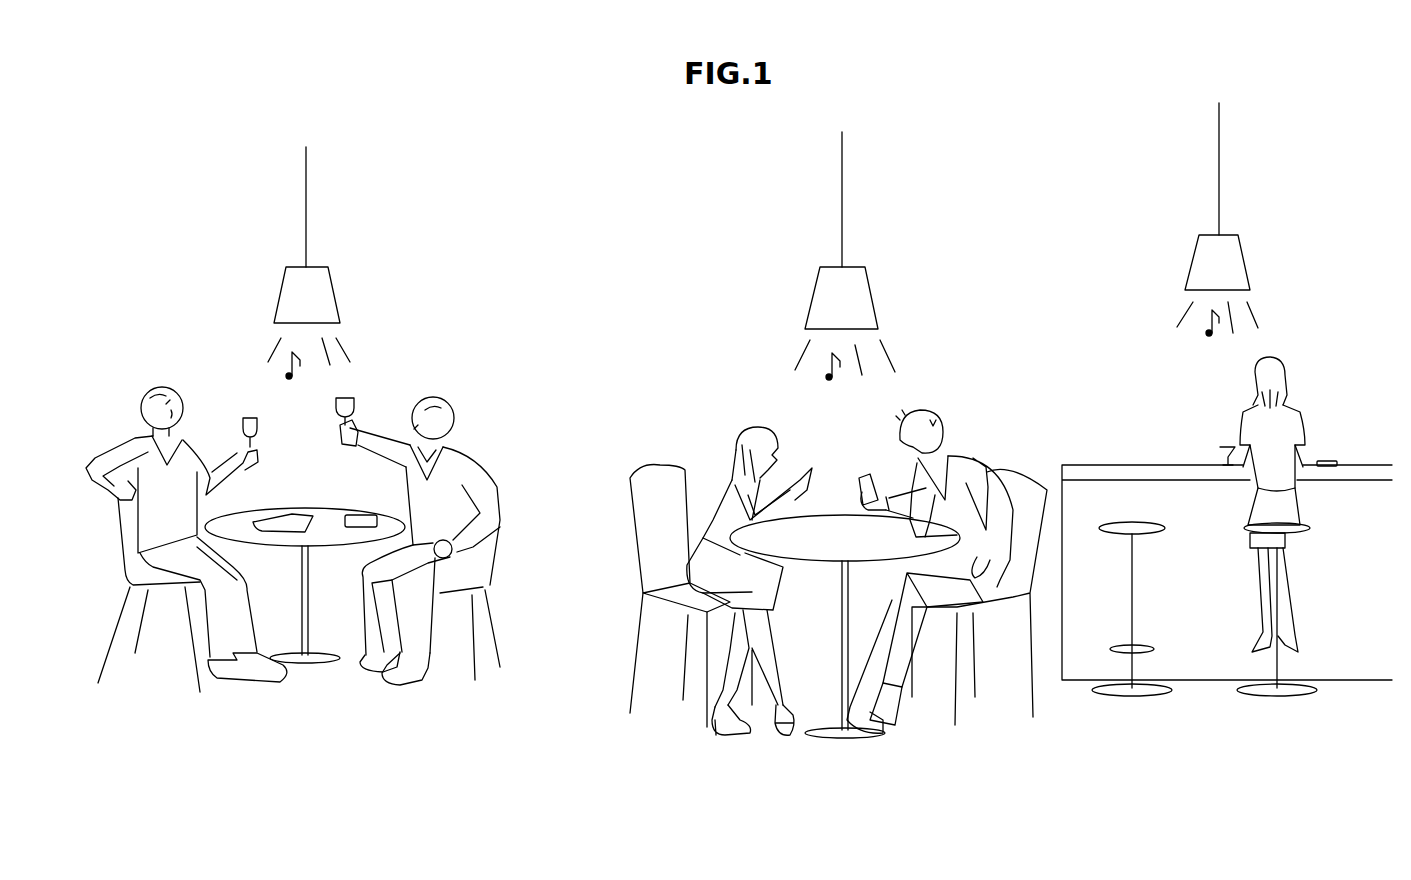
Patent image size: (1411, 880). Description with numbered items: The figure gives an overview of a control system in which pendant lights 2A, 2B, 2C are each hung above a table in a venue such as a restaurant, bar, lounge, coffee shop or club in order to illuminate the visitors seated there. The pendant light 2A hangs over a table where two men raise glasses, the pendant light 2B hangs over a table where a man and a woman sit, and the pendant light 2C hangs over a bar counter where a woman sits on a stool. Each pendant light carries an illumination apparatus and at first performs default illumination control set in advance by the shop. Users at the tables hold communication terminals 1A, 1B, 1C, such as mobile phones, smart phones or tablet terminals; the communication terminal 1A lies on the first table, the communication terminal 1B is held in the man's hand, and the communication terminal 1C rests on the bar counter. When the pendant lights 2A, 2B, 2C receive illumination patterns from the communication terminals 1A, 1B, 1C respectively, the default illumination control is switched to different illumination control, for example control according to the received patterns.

The communication terminal 1A is at (357, 515).
The pendant light 2A is at (330, 283).
The communication terminal 1B is at (862, 473).
The pendant light 2B is at (870, 285).
The communication terminal 1C is at (1328, 458).
The pendant light 2C is at (1245, 252).